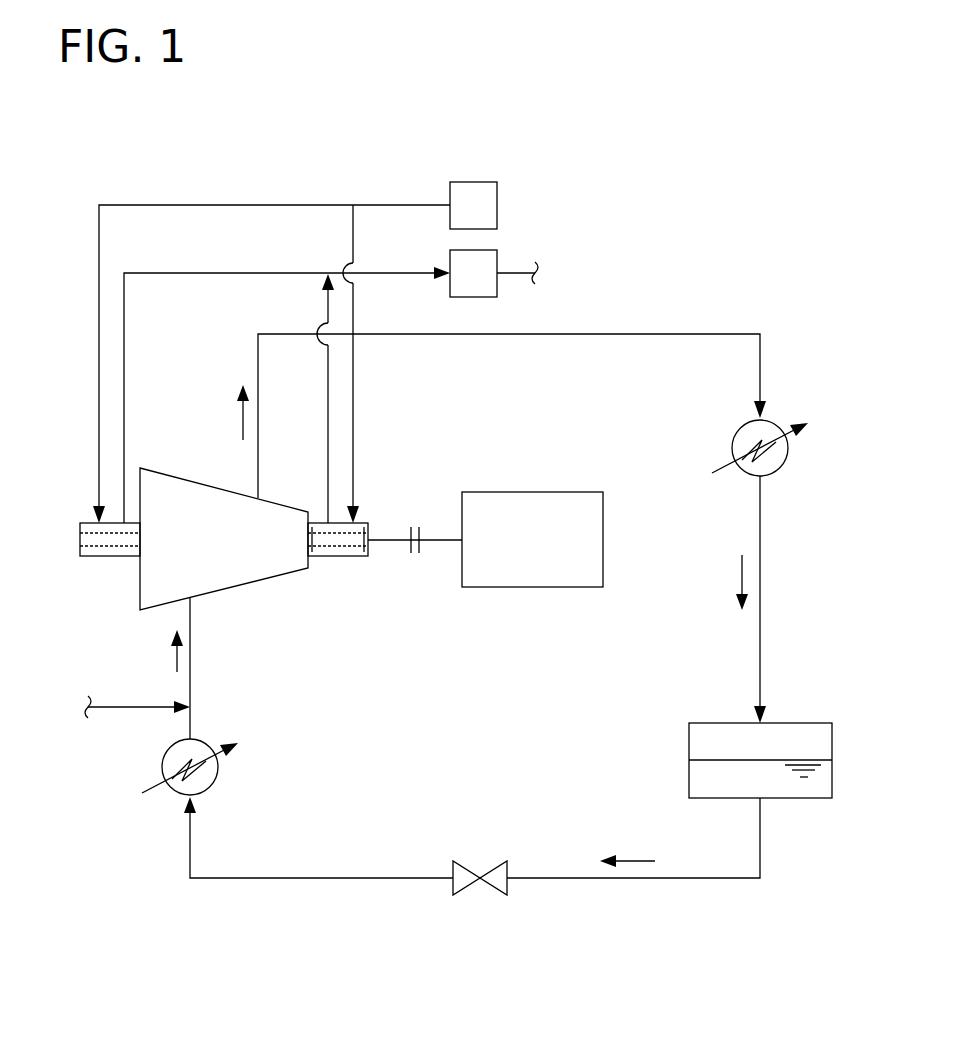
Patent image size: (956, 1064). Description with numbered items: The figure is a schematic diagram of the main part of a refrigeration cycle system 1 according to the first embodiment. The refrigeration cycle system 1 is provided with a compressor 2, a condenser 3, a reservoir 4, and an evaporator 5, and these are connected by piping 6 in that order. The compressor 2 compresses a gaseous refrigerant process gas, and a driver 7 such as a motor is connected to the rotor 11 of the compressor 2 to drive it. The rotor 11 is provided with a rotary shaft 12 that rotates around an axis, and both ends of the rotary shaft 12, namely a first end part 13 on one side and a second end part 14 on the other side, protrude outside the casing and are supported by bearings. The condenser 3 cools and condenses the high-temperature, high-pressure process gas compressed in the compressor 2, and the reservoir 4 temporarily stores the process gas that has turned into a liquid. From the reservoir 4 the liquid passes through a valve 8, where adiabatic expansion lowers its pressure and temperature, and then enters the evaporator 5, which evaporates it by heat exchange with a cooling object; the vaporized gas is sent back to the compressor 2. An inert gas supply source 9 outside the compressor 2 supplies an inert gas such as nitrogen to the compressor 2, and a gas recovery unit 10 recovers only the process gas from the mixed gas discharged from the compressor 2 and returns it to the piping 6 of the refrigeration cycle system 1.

The refrigeration cycle system 1 is at (752, 120).
The compressor 2 is at (278, 590).
The condenser 3 is at (788, 452).
The reservoir 4 is at (803, 723).
The evaporator 5 is at (218, 775).
The piping 6 is at (669, 333).
The driver 7 is at (545, 492).
The valve 8 is at (493, 868).
The inert gas supply source 9 is at (497, 202).
The gas recovery unit 10 is at (497, 258).
The rotor 11 is at (346, 580).
The rotary shaft 12 is at (320, 558).
The first end part 13 is at (368, 558).
The second end part 14 is at (80, 548).